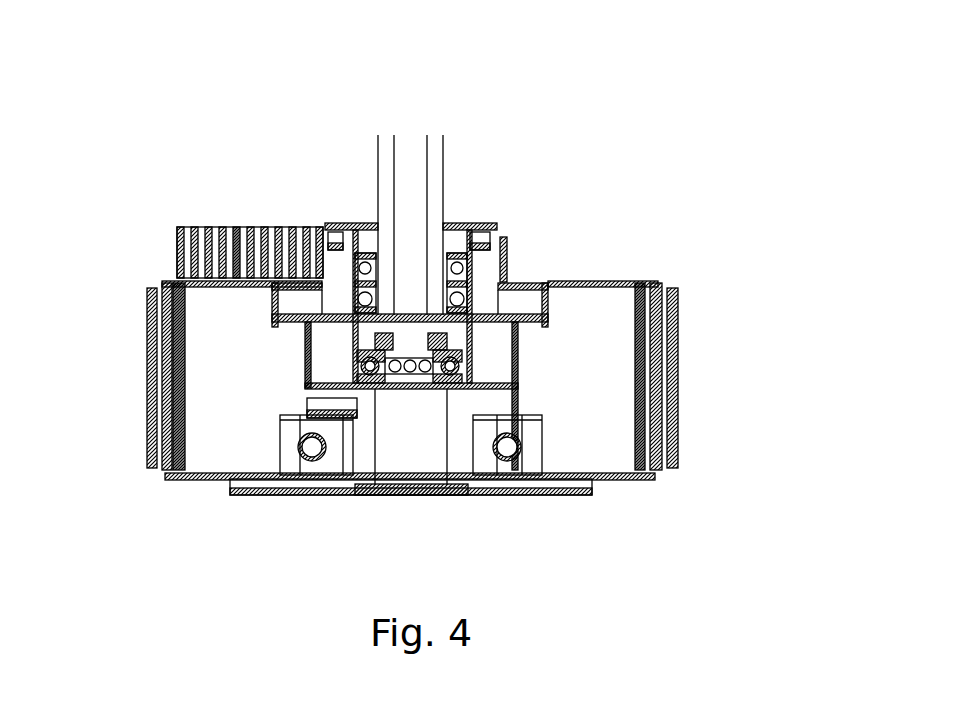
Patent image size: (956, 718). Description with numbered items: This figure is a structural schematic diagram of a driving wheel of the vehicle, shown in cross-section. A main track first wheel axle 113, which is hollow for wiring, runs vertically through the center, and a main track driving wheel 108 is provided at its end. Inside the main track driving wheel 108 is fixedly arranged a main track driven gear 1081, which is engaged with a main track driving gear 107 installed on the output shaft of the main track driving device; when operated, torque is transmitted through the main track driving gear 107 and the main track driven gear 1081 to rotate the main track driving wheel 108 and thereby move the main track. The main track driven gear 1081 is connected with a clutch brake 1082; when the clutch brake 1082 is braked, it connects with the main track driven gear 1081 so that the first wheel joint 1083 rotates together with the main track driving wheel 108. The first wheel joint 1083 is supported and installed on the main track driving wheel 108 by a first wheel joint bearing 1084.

The main track driving gear 107 is at (203, 250).
The main track driving wheel 108 is at (600, 358).
The main track first wheel axle 113 is at (433, 178).
The main track driven gear 1081 is at (322, 267).
The clutch brake 1082 is at (493, 342).
The first wheel joint 1083 is at (460, 447).
The first wheel joint bearing 1084 is at (300, 457).